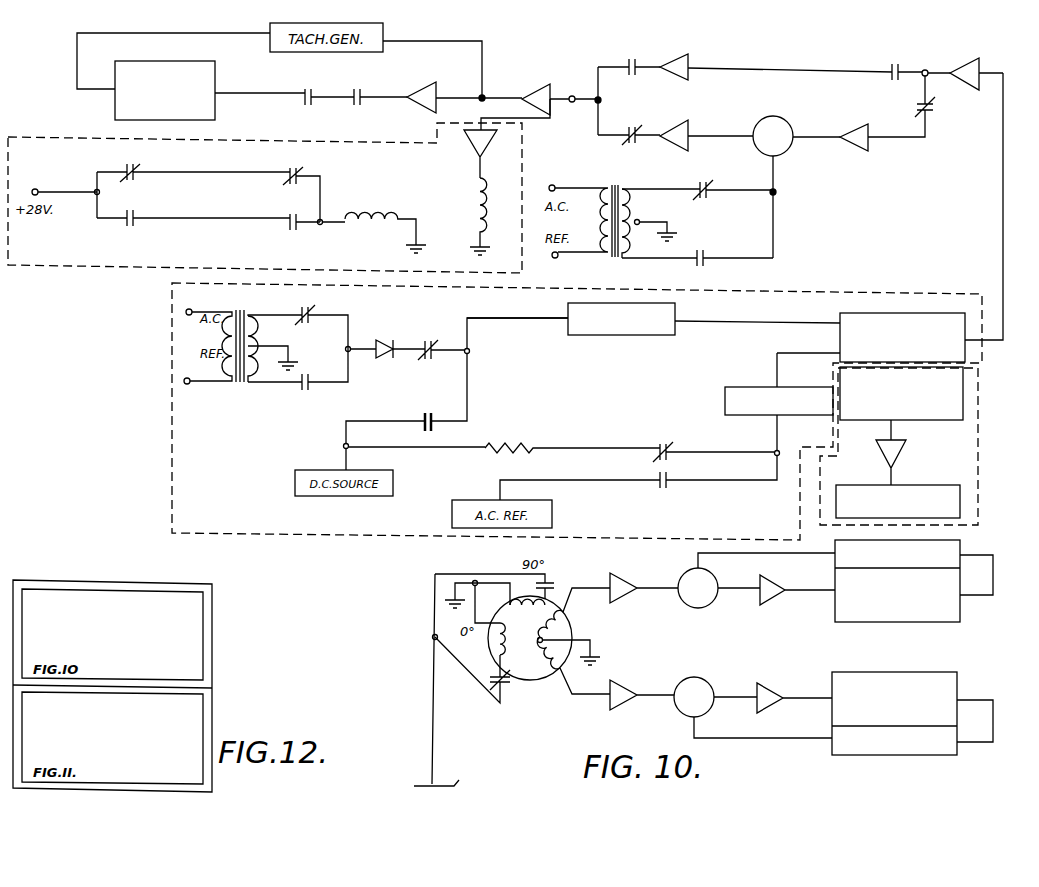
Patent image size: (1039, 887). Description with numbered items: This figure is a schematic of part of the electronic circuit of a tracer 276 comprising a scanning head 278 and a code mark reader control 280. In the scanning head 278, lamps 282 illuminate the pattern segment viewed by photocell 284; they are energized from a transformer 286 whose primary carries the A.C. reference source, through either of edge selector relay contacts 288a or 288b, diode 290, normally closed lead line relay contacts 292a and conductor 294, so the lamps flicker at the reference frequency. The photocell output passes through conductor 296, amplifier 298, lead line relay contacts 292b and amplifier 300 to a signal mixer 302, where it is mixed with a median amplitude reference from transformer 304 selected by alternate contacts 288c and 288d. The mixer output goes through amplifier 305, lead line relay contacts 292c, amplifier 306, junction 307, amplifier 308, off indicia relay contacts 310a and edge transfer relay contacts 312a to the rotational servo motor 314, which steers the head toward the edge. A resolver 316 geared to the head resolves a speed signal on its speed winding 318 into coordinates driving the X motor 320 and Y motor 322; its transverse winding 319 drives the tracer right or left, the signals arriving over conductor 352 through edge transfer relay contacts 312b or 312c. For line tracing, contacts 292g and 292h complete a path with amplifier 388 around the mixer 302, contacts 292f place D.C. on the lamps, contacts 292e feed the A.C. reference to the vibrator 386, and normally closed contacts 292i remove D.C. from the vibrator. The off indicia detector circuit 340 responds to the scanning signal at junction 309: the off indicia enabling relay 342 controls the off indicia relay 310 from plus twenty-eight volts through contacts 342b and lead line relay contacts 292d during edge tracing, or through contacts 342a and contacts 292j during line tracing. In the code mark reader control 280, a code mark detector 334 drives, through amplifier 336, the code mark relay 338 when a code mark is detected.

The rotational servo motor 314 is at (197, 60).
The edge transfer relay contacts 312a is at (306, 92).
The off indicia relay contacts 310a is at (359, 90).
The amplifier 308 is at (434, 82).
The junction 307 is at (486, 96).
The amplifier 306 is at (562, 78).
The junction 309 is at (573, 103).
The lead line relay contacts 292h is at (635, 76).
The amplifier 388 is at (691, 80).
The amplifier 305 is at (691, 121).
The signal mixer 302 is at (787, 122).
The lead line relay contacts 292c is at (634, 138).
The lead line relay contacts 292g is at (892, 80).
The amplifier 298 is at (954, 67).
The conductor 296 is at (1003, 243).
The lead line relay contacts 292b is at (931, 108).
The amplifier 300 is at (862, 125).
The off indicia enabling relay contacts 342b is at (134, 170).
The off indicia enabling relay contacts 342a is at (133, 226).
The lead line relay contacts 292d is at (293, 170).
The lead line relay contacts 292j is at (288, 228).
The off indicia relay 310 is at (389, 215).
The off indicia enabling relay 342 is at (480, 216).
The off indicia detector circuit 340 is at (54, 267).
The transformer 304 is at (602, 257).
The edge selector relay contacts 288c is at (708, 195).
The edge selector relay contacts 288d is at (701, 256).
The scanning head 278 is at (400, 537).
The transformer 286 is at (232, 380).
The tracer 276 is at (170, 378).
The edge selector relay contacts 288a is at (309, 307).
The edge selector relay contacts 288b is at (309, 390).
The diode 290 is at (376, 339).
The lead line relay contacts 292a is at (428, 358).
The lead line relay contacts 292f is at (422, 411).
The conductor 294 is at (500, 318).
The lamps 282 is at (640, 337).
The photocell 284 is at (840, 336).
The vibrator 386 is at (724, 404).
The lead line relay contacts 292i is at (661, 442).
The lead line relay contacts 292e is at (660, 489).
The code mark detector 334 is at (914, 420).
The amplifier 336 is at (900, 445).
The code mark relay 338 is at (866, 484).
The code mark reader control 280 is at (979, 487).
The conductor 352 is at (435, 738).
The edge transfer relay contacts 312c is at (548, 581).
The transverse winding 319 is at (515, 596).
The speed winding 318 is at (498, 646).
The edge transfer relay contacts 312b is at (501, 690).
The resolver 316 is at (570, 622).
The X motor 320 is at (860, 623).
The Y motor 322 is at (897, 649).